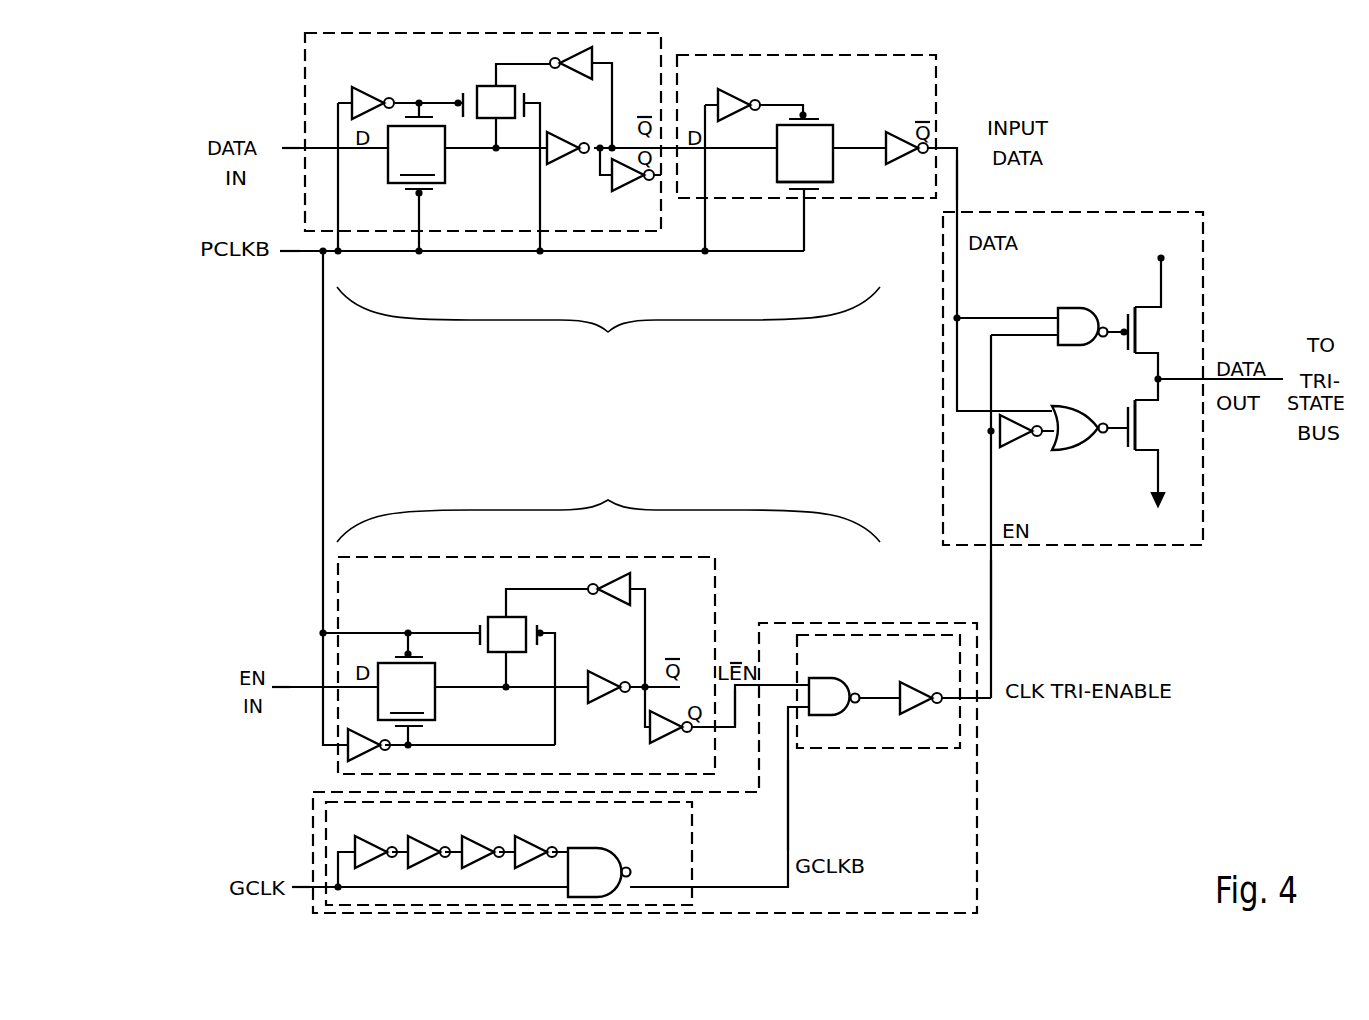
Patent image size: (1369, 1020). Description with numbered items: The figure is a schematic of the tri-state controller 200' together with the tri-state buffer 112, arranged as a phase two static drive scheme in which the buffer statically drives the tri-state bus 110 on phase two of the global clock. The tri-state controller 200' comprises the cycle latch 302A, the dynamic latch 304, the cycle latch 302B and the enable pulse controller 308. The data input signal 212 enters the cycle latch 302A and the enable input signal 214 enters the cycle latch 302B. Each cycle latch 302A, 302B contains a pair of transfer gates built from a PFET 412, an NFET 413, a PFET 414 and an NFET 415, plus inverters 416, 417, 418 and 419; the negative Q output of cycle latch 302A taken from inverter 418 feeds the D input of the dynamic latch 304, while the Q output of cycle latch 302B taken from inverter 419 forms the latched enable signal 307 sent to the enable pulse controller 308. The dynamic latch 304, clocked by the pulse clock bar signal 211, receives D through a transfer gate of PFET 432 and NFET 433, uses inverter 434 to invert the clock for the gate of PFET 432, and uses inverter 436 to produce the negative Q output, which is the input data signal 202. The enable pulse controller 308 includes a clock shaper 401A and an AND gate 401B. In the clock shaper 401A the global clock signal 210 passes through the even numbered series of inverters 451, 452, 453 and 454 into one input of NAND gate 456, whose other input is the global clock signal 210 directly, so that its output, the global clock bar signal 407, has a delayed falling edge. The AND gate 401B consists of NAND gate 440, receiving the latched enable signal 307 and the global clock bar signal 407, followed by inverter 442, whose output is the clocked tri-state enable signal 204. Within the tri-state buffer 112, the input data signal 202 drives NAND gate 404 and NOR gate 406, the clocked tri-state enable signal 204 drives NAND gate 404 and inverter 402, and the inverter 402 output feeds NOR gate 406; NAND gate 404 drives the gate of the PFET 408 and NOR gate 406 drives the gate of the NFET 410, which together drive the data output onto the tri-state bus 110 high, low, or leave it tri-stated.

The tri-state bus 110 is at (1270, 384).
The tri-state buffer 112 is at (1197, 243).
The tri-state controller 200' is at (608, 414).
The input data signal 202 is at (957, 186).
The clocked tri-state enable signal 204 is at (992, 606).
The global clock signal GCLK 210 is at (300, 882).
The pulse clock bar signal PCLKB 211 is at (296, 256).
The data input signal 212 is at (292, 150).
The enable input signal 214 is at (308, 689).
The cycle latch 302A is at (360, 61).
The cycle latch 302B is at (708, 588).
The dynamic latch 304 is at (931, 83).
The latched enable signal LEN 307 is at (735, 730).
The enable pulse controller 308 is at (965, 903).
The clock shaper 401A is at (683, 838).
The AND gate 401B is at (953, 745).
The inverter 402 is at (1013, 445).
The NAND gate 404 is at (1078, 312).
The NOR gate 406 is at (1075, 452).
The global clock bar signal GCLKB 407 is at (789, 815).
The p-channel field effect transistor 408 is at (1149, 330).
The n-channel field effect transistor 410 is at (1151, 425).
The PFET 412 is at (424, 688).
The NFET 413 is at (435, 151).
The PFET 414 is at (478, 92).
The NFET 415 is at (514, 96).
The inverter 416 is at (372, 98).
The inverter 417 is at (592, 66).
The inverter 418 is at (566, 140).
The inverter 419 is at (612, 186).
The PFET 432 is at (822, 150).
The NFET 433 is at (822, 175).
The inverter 434 is at (731, 98).
The inverter 436 is at (896, 134).
The NAND gate 440 is at (823, 693).
The inverter 442 is at (912, 688).
The inverter 451 is at (371, 846).
The inverter 452 is at (424, 846).
The inverter 453 is at (478, 846).
The inverter 454 is at (531, 846).
The NAND gate 456 is at (609, 883).